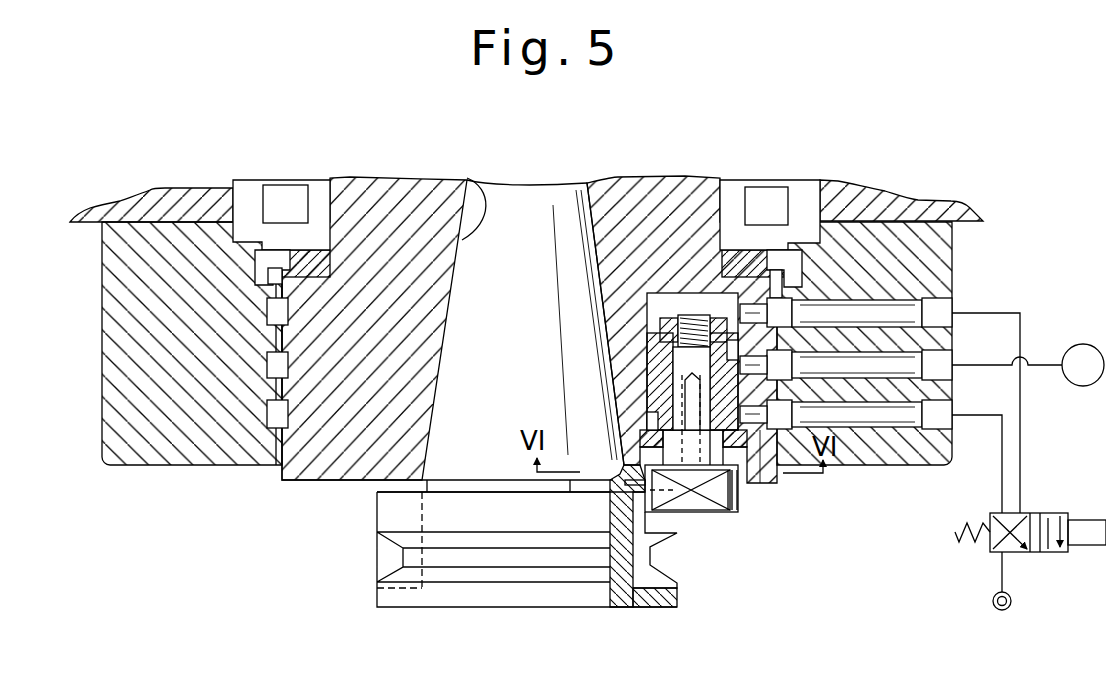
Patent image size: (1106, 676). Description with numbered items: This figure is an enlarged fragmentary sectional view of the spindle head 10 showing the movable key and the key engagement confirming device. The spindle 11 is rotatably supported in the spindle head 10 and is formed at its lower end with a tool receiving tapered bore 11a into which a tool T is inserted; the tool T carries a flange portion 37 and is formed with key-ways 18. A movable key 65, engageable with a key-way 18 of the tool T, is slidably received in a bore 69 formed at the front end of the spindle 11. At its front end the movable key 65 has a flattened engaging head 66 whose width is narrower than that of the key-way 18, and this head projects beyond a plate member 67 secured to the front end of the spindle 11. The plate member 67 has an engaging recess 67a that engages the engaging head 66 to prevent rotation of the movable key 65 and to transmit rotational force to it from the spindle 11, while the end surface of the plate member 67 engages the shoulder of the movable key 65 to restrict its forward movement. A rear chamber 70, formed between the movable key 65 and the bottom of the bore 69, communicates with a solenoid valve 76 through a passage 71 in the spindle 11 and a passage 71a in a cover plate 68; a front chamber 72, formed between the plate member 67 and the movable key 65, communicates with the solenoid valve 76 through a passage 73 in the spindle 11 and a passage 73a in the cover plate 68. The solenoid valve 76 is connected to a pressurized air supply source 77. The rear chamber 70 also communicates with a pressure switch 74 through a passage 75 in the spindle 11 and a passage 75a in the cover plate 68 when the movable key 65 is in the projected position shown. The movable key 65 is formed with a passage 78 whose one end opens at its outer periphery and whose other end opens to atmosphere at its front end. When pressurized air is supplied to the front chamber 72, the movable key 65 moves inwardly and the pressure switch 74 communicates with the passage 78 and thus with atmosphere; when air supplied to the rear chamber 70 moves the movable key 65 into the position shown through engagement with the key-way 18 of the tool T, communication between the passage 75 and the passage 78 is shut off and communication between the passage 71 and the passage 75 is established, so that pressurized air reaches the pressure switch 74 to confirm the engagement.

The spindle head 10 is at (847, 195).
The spindle 11 is at (318, 483).
The tool receiving tapered bore 11a is at (475, 178).
The key-way 18 is at (425, 500).
The flange portion 37 is at (667, 598).
The movable key 65 is at (745, 503).
The engaging head 66 is at (720, 508).
The plate member 67 is at (748, 472).
The engaging recess 67a is at (748, 497).
The cover plate 68 is at (935, 262).
The bore 69 is at (645, 375).
The rear chamber 70 is at (648, 318).
The passage 71 is at (757, 345).
The passage 71a is at (905, 312).
The front chamber 72 is at (647, 420).
The passage 73 is at (770, 455).
The passage 73a is at (893, 420).
The pressure switch 74 is at (1085, 387).
The passage 75 is at (752, 360).
The passage 75a is at (882, 370).
The solenoid valve 76 is at (1045, 513).
The pressurized air supply source 77 is at (1012, 601).
The passage 78 is at (690, 515).
The tool T is at (492, 608).